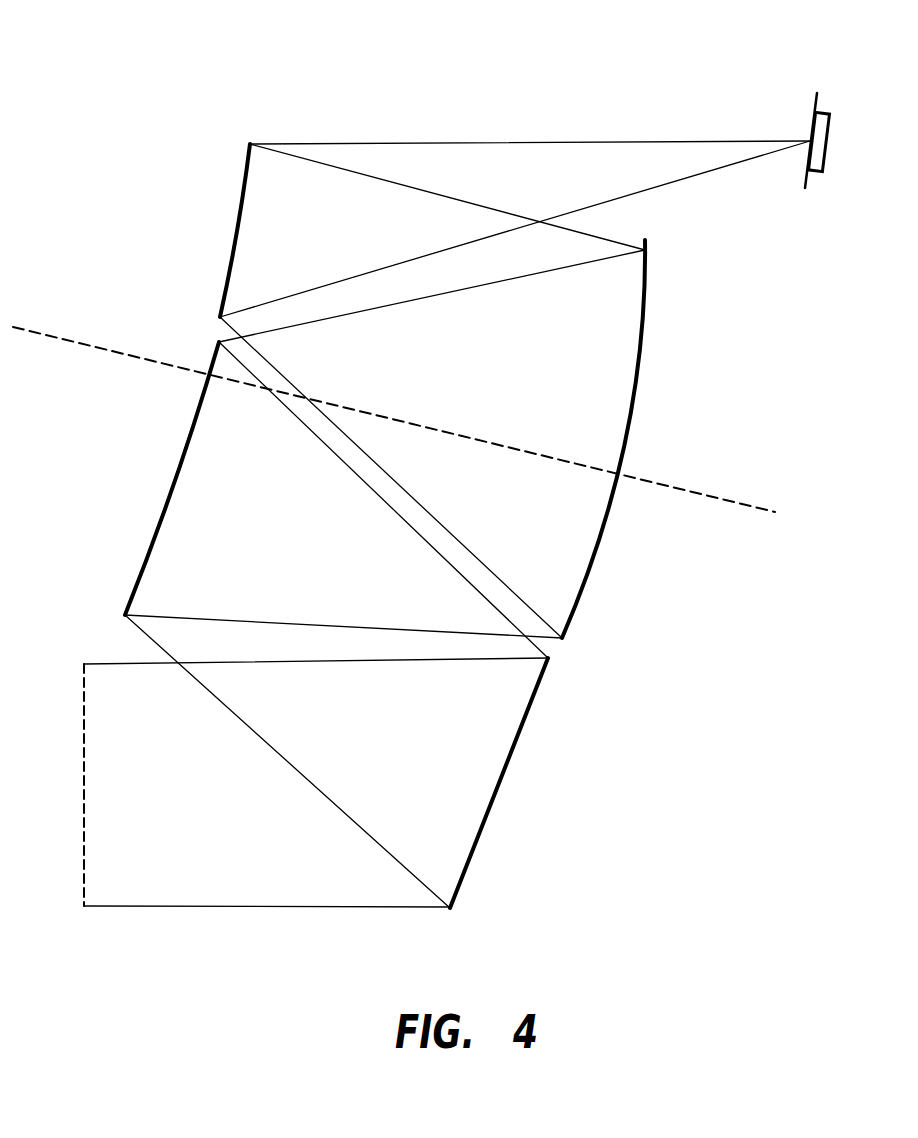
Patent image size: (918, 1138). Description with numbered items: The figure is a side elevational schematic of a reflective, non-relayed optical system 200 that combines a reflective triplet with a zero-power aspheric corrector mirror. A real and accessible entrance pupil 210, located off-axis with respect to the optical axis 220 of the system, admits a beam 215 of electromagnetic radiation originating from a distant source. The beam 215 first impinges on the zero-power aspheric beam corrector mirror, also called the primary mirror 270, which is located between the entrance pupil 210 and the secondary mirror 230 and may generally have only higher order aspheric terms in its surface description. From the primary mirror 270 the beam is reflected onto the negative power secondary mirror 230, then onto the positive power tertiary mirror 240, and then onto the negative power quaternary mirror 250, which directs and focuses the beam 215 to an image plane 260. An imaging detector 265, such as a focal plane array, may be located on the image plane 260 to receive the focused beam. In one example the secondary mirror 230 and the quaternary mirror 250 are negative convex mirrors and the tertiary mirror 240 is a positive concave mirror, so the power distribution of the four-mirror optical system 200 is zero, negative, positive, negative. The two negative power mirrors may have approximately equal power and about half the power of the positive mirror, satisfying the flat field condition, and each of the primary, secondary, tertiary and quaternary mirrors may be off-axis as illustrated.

The optical system 200 is at (301, 78).
The entrance pupil 210 is at (83, 690).
The beam 215 is at (432, 663).
The optical axis 220 is at (695, 492).
The secondary mirror 230 is at (182, 460).
The tertiary mirror 240 is at (645, 318).
The quaternary mirror 250 is at (237, 230).
The image plane 260 is at (820, 108).
The imaging detector 265 is at (803, 187).
The primary mirror 270 is at (510, 762).